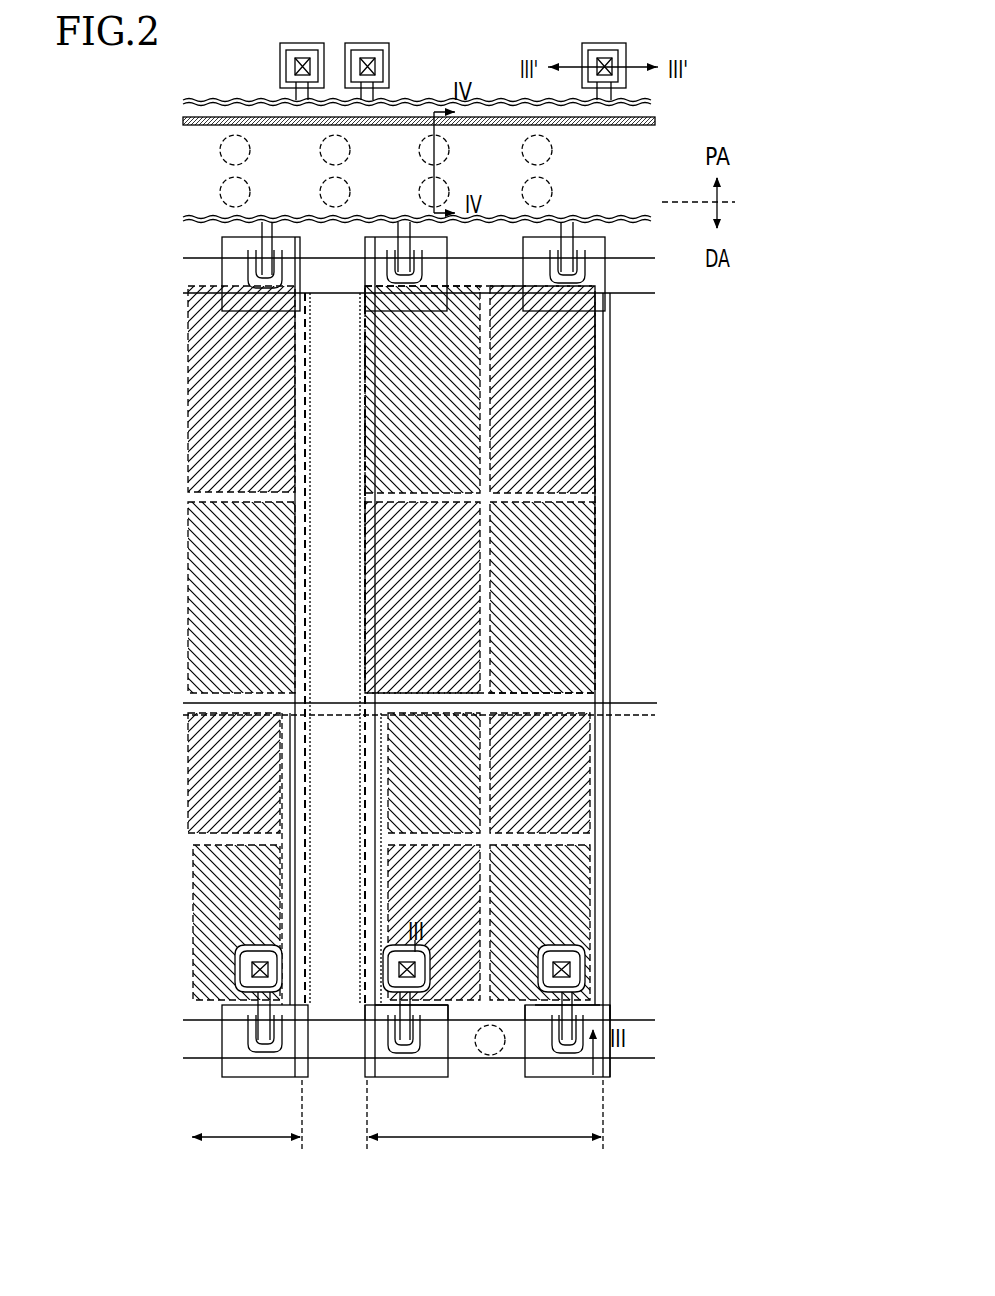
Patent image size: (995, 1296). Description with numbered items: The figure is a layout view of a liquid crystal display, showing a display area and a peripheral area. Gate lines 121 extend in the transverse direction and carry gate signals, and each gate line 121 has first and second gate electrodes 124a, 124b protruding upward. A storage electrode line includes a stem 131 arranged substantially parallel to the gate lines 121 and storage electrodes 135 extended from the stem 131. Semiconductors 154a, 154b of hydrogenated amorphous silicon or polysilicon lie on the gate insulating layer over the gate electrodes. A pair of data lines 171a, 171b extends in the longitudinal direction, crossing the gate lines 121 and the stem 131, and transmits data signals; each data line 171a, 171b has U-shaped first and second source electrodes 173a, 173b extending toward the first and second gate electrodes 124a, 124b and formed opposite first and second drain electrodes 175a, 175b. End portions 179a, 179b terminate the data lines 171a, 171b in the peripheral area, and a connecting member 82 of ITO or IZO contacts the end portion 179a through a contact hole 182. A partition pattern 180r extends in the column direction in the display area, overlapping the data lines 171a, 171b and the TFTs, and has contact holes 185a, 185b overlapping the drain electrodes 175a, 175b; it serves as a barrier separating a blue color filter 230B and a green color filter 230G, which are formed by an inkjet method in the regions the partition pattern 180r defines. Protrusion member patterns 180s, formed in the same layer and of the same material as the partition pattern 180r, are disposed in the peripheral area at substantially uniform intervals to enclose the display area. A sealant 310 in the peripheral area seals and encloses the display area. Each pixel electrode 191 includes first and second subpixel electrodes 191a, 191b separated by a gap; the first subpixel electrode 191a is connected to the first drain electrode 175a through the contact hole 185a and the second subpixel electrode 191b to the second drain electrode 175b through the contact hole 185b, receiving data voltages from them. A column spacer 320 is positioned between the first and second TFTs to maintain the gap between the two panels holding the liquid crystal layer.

The sealant 310 is at (219, 117).
The end portion of the data line 179b is at (360, 50).
The end portion of the data line 179a is at (590, 50).
The contact hole 182 is at (606, 58).
The connecting member 82 is at (626, 53).
The protrusion member pattern 180s is at (552, 192).
The second subpixel electrode 191b is at (594, 491).
The first subpixel electrode 191a is at (576, 775).
The pixel electrode 191 is at (745, 610).
The partition pattern 180r is at (365, 568).
The data line 171b is at (375, 768).
The data line 171a is at (600, 886).
The storage electrode 135 is at (594, 748).
The stem 131 is at (627, 703).
The gate line 121 is at (655, 1022).
The first gate electrode 124a is at (535, 1018).
The second gate electrode 124b is at (433, 1040).
The semiconductor 154a is at (586, 1050).
The semiconductor 154b is at (386, 1045).
The first source electrode 173a is at (562, 1047).
The second source electrode 173b is at (440, 1040).
The first drain electrode 175a is at (578, 993).
The second drain electrode 175b is at (398, 1002).
The contact hole 185a is at (562, 970).
The contact hole 185b is at (420, 980).
The spacer 320 is at (490, 1055).
The green color filter 230G is at (247, 1123).
The blue color filter 230B is at (485, 1123).